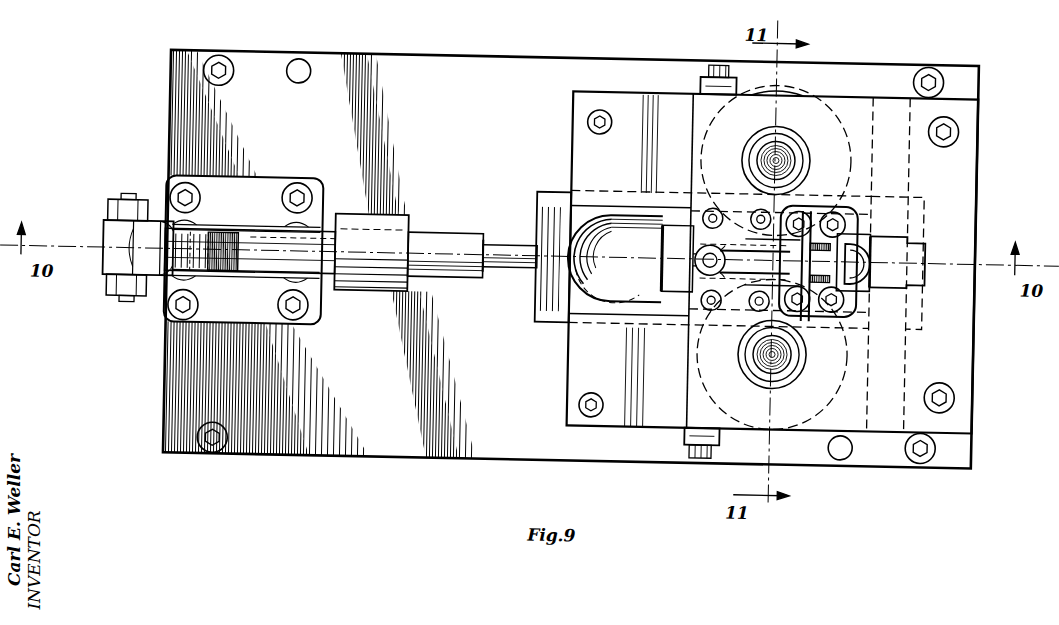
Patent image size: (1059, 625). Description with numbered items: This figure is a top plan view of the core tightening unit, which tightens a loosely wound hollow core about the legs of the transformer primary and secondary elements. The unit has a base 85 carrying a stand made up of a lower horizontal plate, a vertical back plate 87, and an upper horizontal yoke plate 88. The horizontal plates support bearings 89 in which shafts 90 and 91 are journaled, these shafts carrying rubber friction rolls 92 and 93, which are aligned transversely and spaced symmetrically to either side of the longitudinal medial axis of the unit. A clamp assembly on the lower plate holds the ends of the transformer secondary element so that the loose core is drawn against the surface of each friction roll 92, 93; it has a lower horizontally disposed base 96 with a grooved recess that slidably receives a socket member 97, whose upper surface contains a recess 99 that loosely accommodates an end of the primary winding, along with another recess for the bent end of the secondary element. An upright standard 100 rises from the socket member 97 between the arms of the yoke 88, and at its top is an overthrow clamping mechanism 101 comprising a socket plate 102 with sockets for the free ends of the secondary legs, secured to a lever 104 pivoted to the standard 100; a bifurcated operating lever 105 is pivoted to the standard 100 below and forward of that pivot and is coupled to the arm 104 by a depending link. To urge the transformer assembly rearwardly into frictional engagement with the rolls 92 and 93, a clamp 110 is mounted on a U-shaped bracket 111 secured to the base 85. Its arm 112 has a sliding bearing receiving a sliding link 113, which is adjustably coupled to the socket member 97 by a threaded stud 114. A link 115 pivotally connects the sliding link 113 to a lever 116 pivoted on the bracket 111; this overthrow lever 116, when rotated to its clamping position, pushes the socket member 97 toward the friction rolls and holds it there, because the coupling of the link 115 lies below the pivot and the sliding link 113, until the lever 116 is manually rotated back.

The base 85 is at (425, 57).
The vertical back plate 87 is at (950, 352).
The upper horizontal yoke plate 88 is at (712, 135).
The bearings 89 is at (748, 159).
The shaft 90 is at (762, 361).
The shaft 91 is at (786, 152).
The rubber friction roll 92 is at (715, 398).
The rubber friction roll 93 is at (787, 87).
The base of clamp assembly 96 is at (583, 149).
The socket member 97 is at (538, 215).
The recess 99 is at (590, 246).
The upright standard 100 is at (875, 255).
The overthrow clamping mechanism 101 is at (672, 266).
The socket plate 102 is at (667, 247).
The lever 104 is at (690, 256).
The operating lever 105 is at (777, 244).
The clamp 110 is at (252, 224).
The U-shaped bracket 111 is at (170, 212).
The arm 112 is at (348, 296).
The sliding link 113 is at (448, 241).
The threaded stud 114 is at (503, 270).
The link 115 is at (227, 231).
The lever 116 is at (160, 277).